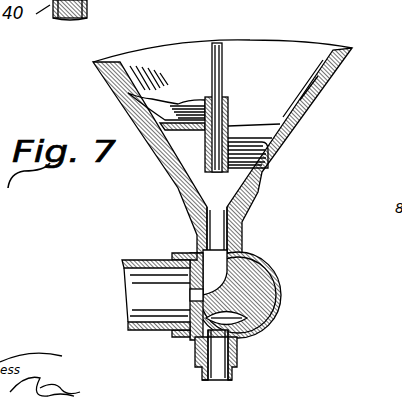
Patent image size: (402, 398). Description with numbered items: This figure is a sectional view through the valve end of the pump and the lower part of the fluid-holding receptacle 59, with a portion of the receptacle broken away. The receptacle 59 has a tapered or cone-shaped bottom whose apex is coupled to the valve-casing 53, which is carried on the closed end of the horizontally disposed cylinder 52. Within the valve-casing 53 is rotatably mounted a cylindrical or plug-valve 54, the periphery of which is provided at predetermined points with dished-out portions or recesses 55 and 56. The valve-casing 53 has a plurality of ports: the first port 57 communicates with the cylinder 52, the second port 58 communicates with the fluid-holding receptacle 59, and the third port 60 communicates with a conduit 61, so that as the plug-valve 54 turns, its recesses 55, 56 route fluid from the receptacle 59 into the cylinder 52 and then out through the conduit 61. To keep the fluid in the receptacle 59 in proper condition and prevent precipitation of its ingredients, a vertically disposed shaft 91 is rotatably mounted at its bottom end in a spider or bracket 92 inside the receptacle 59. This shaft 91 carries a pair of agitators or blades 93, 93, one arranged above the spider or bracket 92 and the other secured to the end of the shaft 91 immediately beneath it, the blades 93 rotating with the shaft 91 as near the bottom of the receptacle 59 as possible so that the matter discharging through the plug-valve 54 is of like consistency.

The cylinder 52 is at (136, 260).
The valve-casing 53 is at (275, 276).
The plug-valve 54 is at (281, 284).
The recess 55 is at (236, 259).
The recess 56 is at (240, 322).
The port 57 is at (190, 322).
The port 58 is at (207, 272).
The fluid-holding receptacle 59 is at (330, 74).
The port 60 is at (198, 340).
The conduit 61 is at (233, 376).
The shaft 91 is at (218, 45).
The spider or bracket 92 is at (272, 135).
The agitator blades 93 is at (125, 100).